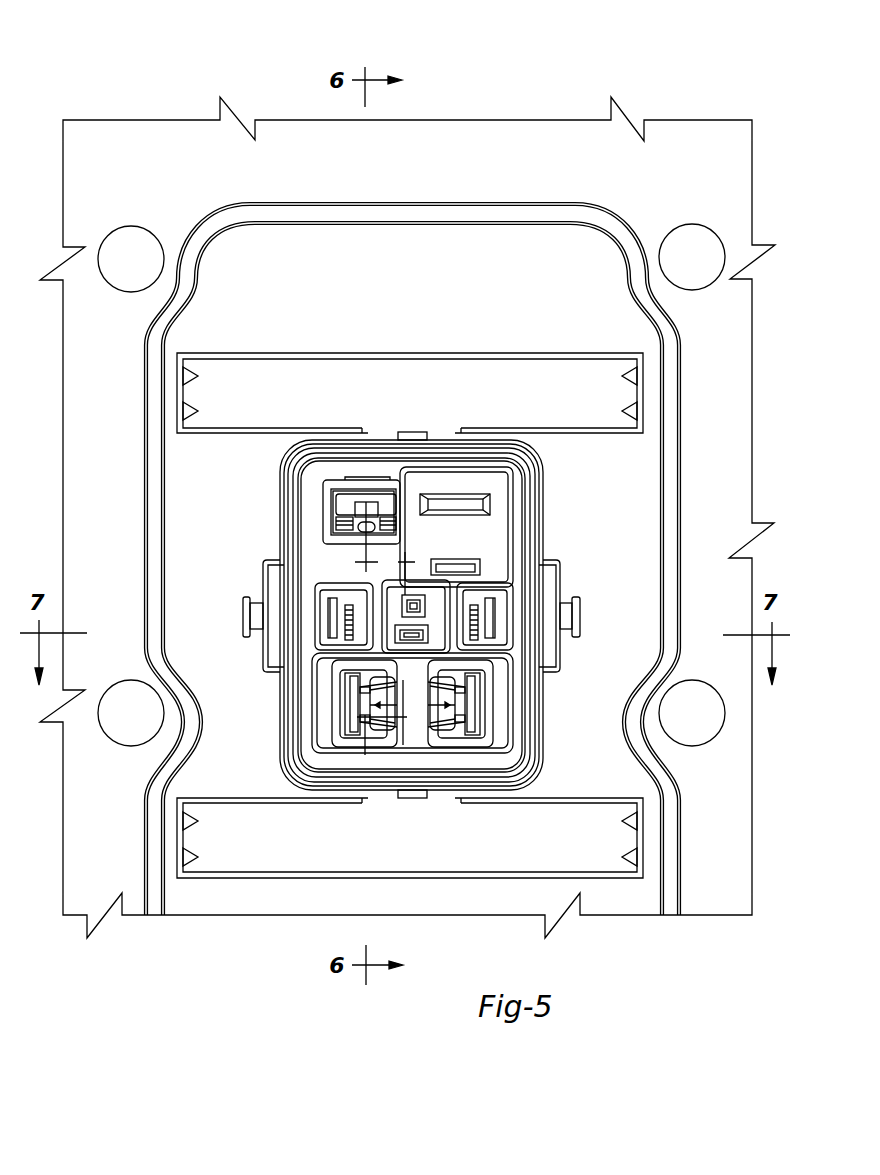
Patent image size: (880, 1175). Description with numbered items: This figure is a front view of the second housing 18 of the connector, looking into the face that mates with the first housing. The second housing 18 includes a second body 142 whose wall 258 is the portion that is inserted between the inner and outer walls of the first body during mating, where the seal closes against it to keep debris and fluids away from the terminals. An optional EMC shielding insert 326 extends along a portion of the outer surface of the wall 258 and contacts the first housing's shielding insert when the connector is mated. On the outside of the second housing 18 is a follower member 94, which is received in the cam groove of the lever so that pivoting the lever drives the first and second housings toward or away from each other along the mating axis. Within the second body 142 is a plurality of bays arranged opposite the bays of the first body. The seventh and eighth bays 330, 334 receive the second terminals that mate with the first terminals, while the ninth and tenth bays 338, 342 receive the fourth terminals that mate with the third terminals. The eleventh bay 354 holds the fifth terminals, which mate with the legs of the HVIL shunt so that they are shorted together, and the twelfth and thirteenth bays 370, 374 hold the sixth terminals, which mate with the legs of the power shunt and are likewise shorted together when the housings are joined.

The second housing 18 is at (158, 80).
The follower member 94 is at (246, 618).
The second body 142 is at (548, 648).
The wall 258 is at (537, 773).
The EMC shielding insert 326 is at (540, 735).
The seventh bay 330 is at (470, 746).
The eighth bay 334 is at (352, 738).
The ninth bay 338 is at (520, 600).
The tenth bay 342 is at (318, 604).
The eleventh bay 354 is at (413, 650).
The twelfth bay 370 is at (510, 502).
The thirteenth bay 374 is at (322, 520).